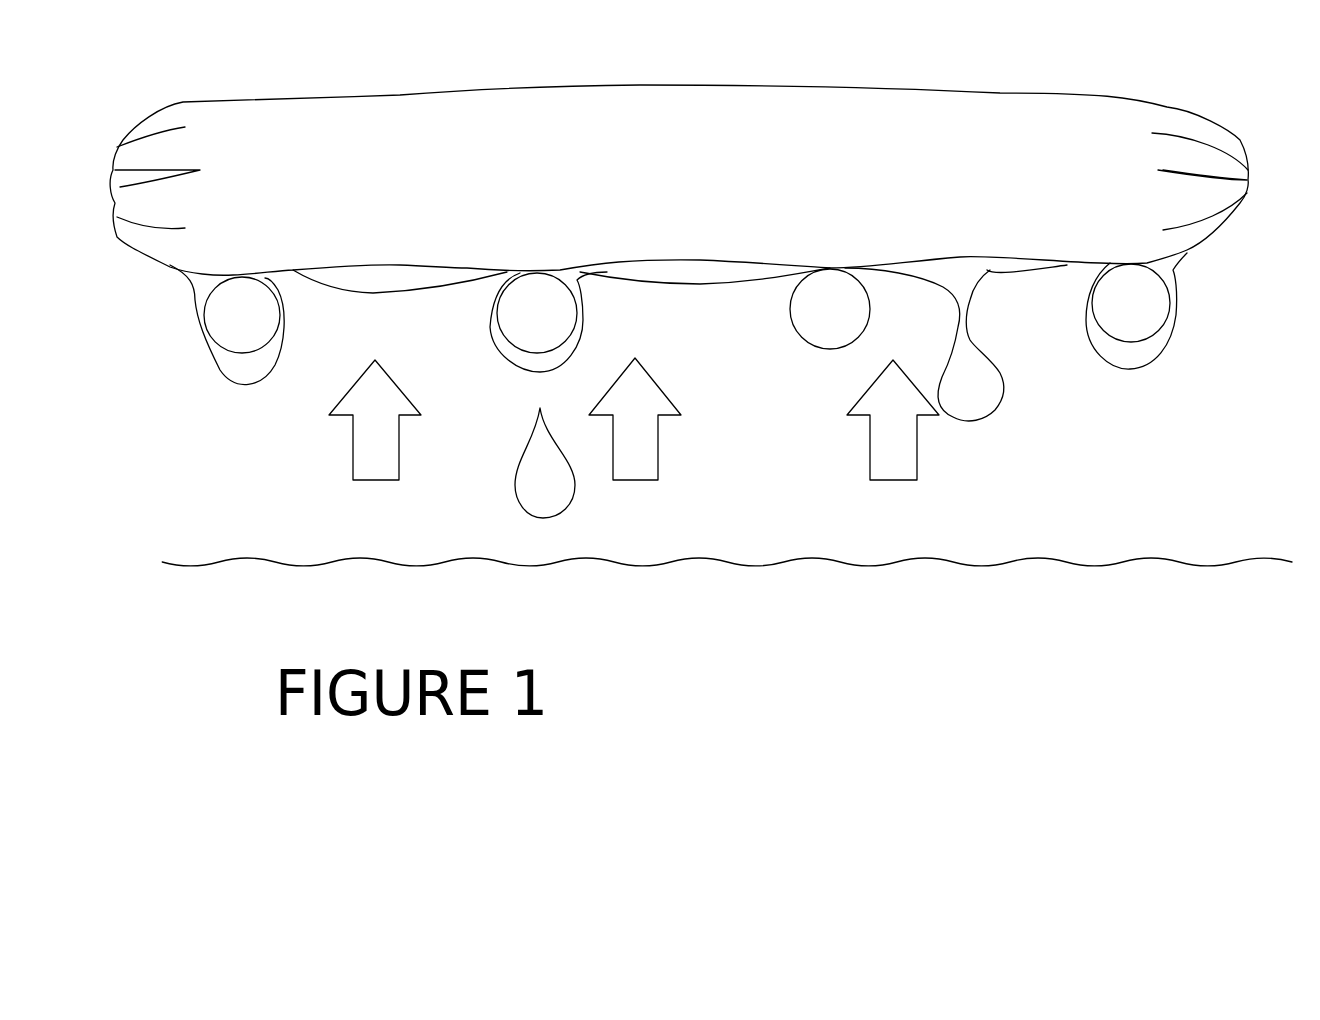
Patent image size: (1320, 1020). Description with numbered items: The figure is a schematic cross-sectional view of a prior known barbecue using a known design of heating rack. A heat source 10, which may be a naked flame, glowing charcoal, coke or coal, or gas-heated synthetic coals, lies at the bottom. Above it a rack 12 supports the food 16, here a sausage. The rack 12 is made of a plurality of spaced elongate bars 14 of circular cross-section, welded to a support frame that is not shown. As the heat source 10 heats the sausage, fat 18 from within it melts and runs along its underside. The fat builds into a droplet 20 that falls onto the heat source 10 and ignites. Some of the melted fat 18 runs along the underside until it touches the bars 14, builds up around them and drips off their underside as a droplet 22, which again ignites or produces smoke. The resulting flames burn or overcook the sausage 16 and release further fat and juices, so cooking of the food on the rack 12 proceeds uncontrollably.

The heat source 10 is at (358, 471).
The rack 12 is at (699, 229).
The bars 14 is at (217, 313).
The food 16 is at (622, 183).
The fat 18 is at (247, 375).
The droplet 20 is at (973, 403).
The droplet 22 is at (553, 503).